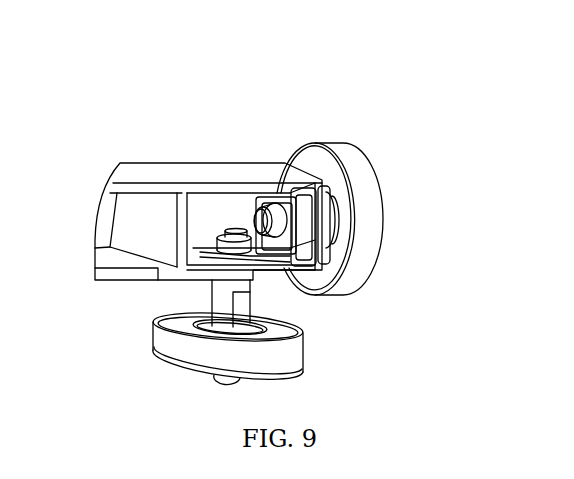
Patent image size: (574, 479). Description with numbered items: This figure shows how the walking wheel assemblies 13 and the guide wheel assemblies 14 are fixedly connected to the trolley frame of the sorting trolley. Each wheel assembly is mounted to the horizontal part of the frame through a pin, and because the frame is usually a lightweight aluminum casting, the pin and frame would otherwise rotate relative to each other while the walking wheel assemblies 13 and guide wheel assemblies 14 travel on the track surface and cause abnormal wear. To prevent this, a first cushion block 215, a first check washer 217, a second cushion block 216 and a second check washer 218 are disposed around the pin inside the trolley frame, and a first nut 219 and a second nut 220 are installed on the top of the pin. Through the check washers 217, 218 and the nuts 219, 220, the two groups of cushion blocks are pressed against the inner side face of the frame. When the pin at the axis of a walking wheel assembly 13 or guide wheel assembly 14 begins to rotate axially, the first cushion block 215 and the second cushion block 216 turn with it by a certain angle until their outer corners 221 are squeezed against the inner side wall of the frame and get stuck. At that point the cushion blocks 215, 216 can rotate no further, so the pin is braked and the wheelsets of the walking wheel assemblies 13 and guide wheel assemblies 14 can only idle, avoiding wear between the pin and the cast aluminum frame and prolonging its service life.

The walking wheel assembly 13 is at (372, 197).
The guide wheel assembly 14 is at (165, 342).
The first cushion block 215 is at (292, 203).
The second cushion block 216 is at (205, 250).
The first check washer 217 is at (285, 226).
The second check washer 218 is at (238, 254).
The first nut 219 is at (226, 230).
The second nut 220 is at (272, 205).
The outer corners 221 is at (259, 245).